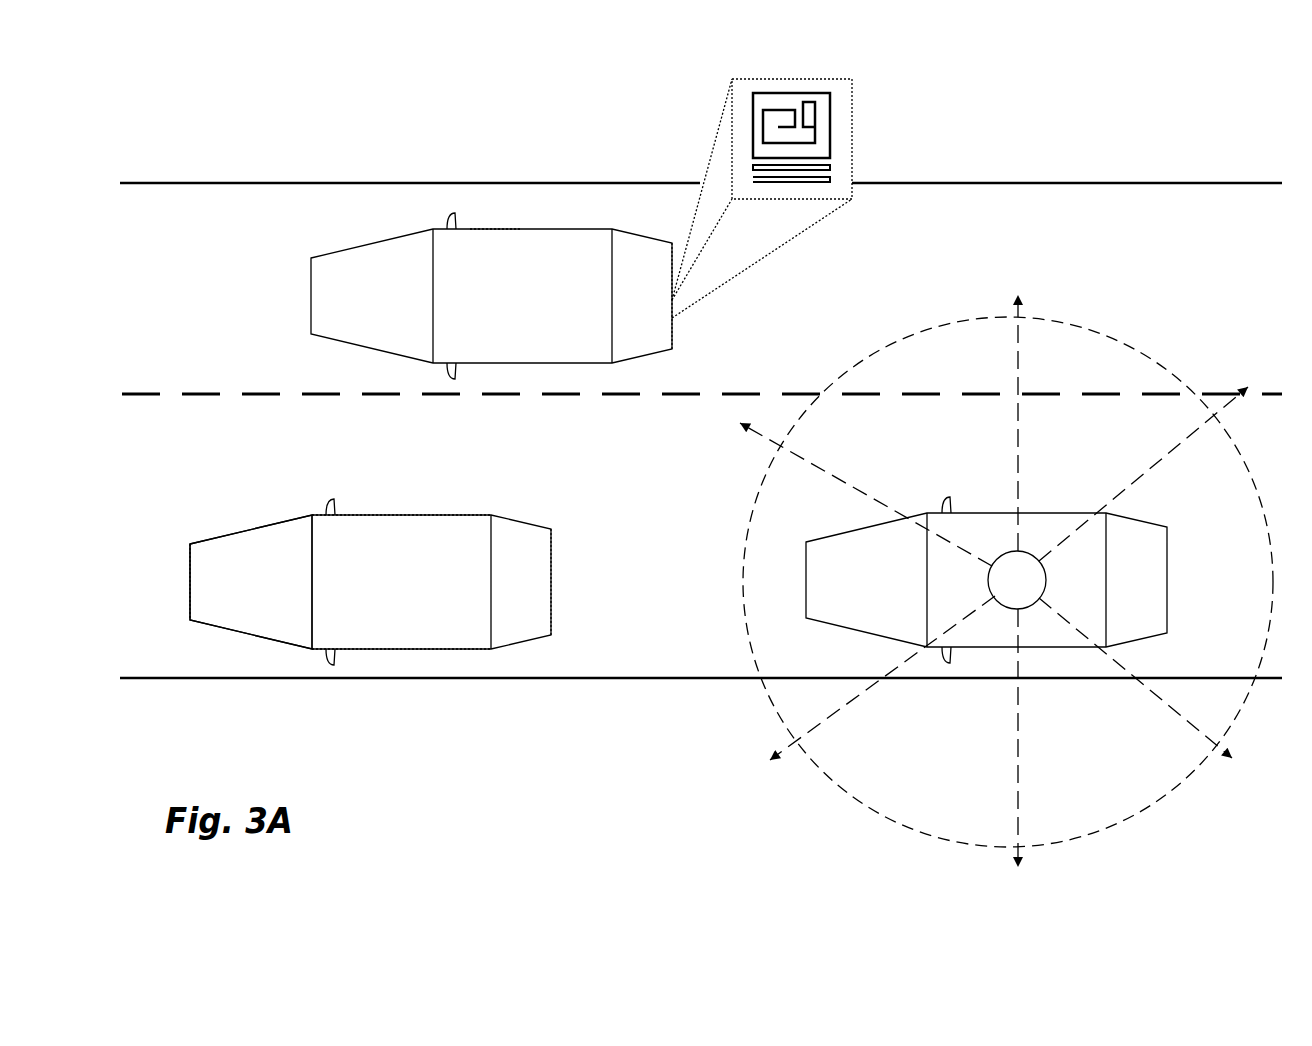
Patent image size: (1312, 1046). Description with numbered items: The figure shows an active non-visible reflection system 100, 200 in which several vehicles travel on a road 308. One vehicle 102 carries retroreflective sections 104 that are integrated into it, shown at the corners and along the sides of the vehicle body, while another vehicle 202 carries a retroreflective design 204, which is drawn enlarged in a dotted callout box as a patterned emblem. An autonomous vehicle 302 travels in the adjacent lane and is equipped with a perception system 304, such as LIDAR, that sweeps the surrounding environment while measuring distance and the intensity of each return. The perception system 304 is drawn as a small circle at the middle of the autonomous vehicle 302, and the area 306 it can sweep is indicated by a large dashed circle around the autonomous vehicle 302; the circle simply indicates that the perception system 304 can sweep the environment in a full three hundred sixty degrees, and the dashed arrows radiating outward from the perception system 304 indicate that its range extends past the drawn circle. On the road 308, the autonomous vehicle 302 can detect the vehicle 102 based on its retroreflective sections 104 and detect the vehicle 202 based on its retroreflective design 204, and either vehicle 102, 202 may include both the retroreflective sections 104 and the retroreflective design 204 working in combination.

The active non-visible reflection system 100 is at (322, 480).
The vehicle 102 is at (273, 567).
The retroreflective sections 104 is at (188, 544).
The active non-visible reflection system 200 is at (366, 223).
The vehicle 202 is at (492, 227).
The retroreflective design 204 is at (830, 138).
The autonomous vehicle 302 is at (987, 512).
The perception system 304 is at (1047, 578).
The area 306 is at (917, 333).
The road 308 is at (258, 182).